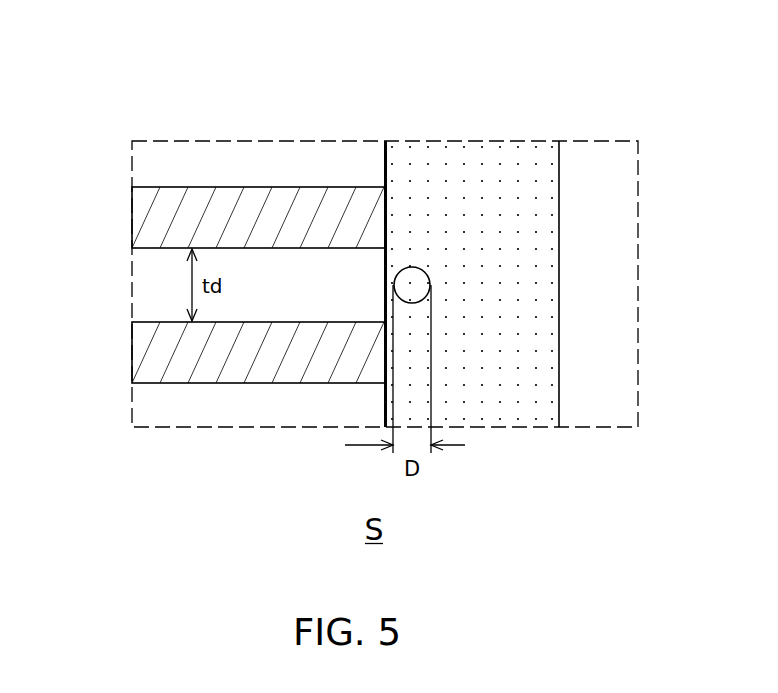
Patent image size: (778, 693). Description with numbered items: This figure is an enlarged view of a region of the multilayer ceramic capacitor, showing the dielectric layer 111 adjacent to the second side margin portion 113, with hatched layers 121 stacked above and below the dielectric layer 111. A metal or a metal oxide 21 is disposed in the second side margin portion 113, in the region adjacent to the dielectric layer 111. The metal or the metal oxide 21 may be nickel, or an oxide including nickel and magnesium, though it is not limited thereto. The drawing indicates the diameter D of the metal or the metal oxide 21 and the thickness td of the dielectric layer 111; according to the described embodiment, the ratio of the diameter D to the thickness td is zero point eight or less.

The display panel layer 121 is at (148, 212).
The dielectric layer 111 is at (148, 284).
The metal or metal oxide 21 is at (410, 273).
The second side margin portion 113 is at (477, 175).